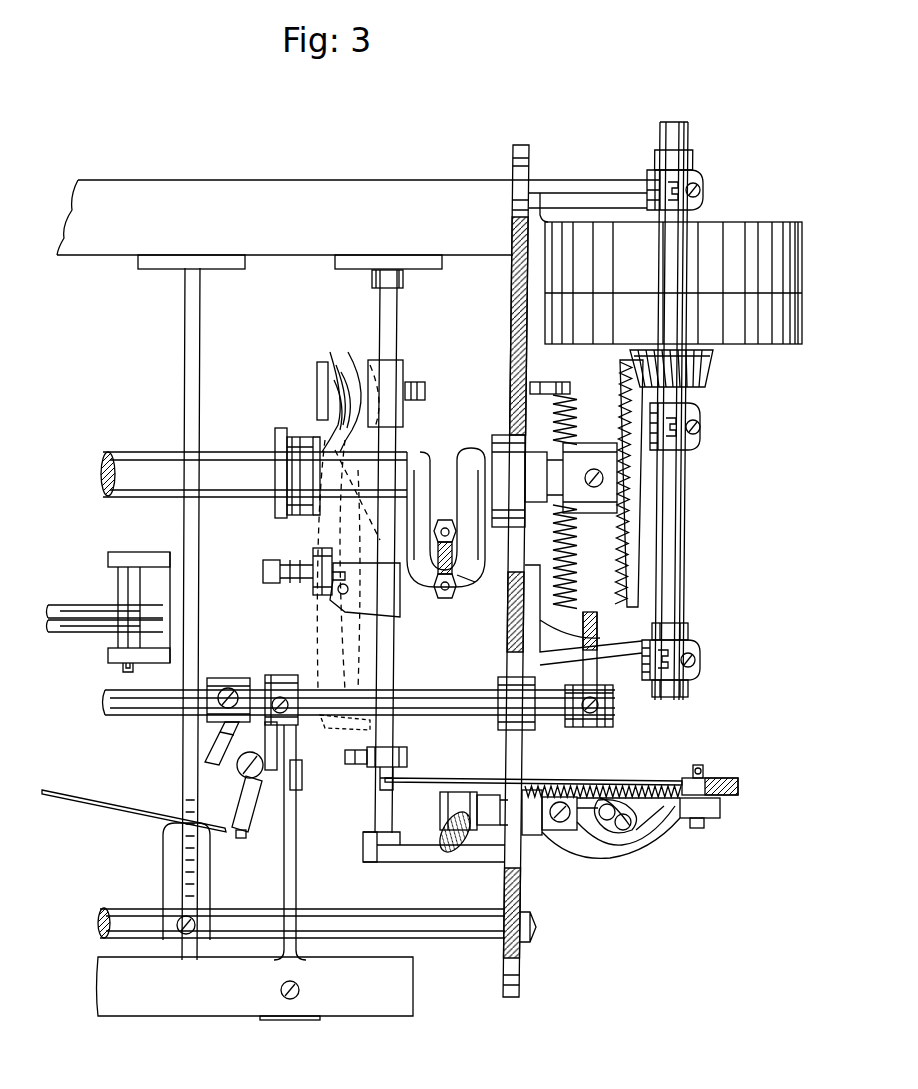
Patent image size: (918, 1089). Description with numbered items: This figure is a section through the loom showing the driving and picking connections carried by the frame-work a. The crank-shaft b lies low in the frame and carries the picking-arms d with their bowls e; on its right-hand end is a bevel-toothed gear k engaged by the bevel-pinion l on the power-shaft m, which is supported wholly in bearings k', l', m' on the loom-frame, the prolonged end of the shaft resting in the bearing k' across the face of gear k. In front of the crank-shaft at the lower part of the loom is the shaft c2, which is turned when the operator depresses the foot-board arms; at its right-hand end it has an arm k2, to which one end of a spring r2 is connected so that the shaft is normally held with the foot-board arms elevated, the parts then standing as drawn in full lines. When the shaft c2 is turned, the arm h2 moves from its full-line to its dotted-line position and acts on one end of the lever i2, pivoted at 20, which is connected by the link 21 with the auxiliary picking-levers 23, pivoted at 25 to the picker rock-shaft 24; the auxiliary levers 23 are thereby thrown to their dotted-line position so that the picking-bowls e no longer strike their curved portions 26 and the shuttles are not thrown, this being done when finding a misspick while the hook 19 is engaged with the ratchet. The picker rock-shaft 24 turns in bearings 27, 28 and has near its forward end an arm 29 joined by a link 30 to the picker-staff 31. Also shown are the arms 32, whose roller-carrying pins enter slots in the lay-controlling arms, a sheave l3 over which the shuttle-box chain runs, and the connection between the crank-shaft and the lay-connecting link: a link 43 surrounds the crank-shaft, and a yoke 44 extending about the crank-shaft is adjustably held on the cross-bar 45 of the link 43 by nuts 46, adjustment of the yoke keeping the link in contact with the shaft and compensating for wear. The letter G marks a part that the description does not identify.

The frame-work a is at (512, 398).
The crank-shaft b is at (254, 466).
The picking-arms d is at (280, 520).
The bowls e is at (320, 598).
The bevel-toothed gear k is at (622, 483).
The bearing k' is at (682, 660).
The arm k2 is at (600, 690).
The bevel-pinion l is at (675, 370).
The bearing l' is at (685, 425).
The sheave l3 is at (624, 832).
The power-shaft m is at (678, 411).
The bearing m' is at (692, 190).
The spring r2 is at (576, 562).
The shaft c2 is at (359, 699).
The arm h2 is at (227, 732).
The lever i2 is at (253, 807).
The crank G is at (467, 545).
The hook 19 is at (298, 838).
The pivot 20 is at (251, 778).
The link 21 is at (347, 726).
The auxiliary picking-levers 23 is at (320, 516).
The picker rock-shaft 24 is at (393, 657).
The pivot 25 is at (350, 589).
The curved portions 26 is at (374, 394).
The bearing 27 is at (435, 836).
The bearing 28 is at (389, 272).
The arm 29 is at (378, 767).
The link 30 is at (482, 784).
The picker-staff 31 is at (718, 781).
The arms 32 is at (92, 800).
The link 43 is at (437, 558).
The yoke 44 is at (444, 600).
The cross-bar 45 is at (460, 586).
The nuts 46 is at (445, 522).